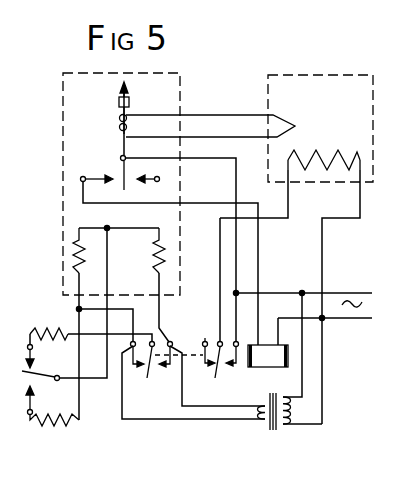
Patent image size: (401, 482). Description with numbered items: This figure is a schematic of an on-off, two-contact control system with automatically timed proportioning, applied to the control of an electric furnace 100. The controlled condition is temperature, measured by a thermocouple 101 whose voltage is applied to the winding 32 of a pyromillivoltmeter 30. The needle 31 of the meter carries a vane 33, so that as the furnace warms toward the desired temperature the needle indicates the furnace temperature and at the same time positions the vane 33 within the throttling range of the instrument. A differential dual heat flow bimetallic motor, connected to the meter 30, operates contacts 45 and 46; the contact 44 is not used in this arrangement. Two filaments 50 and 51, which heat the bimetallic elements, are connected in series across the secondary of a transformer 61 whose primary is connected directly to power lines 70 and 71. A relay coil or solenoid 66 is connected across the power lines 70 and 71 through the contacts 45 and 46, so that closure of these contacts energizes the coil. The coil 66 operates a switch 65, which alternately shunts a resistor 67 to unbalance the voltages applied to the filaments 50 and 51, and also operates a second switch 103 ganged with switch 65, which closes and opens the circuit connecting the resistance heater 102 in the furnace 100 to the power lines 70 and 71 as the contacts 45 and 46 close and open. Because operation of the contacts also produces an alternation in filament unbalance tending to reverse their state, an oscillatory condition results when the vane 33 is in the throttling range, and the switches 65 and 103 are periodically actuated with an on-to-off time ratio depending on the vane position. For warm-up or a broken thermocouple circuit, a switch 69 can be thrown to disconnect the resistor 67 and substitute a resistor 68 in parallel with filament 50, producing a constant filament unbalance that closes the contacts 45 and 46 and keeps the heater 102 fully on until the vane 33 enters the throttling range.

The pyromillivoltmeter 30 is at (180, 81).
The needle 31 is at (116, 89).
The winding 32 is at (118, 121).
The vane 33 is at (130, 101).
The contact 44 is at (139, 182).
The contact 45 is at (120, 159).
The contact 46 is at (104, 177).
The filament 50 is at (72, 256).
The filament 51 is at (153, 249).
The transformer 61 is at (286, 431).
The switch 65 is at (148, 375).
The solenoid 66 is at (268, 368).
The resistor 67 is at (66, 329).
The resistor 68 is at (44, 424).
The switch 69 is at (40, 378).
The power line 70 is at (347, 293).
The power line 71 is at (347, 319).
The electric furnace 100 is at (373, 85).
The thermocouple 101 is at (286, 121).
The resistance heater 102 is at (329, 152).
The second switch 103 is at (217, 376).